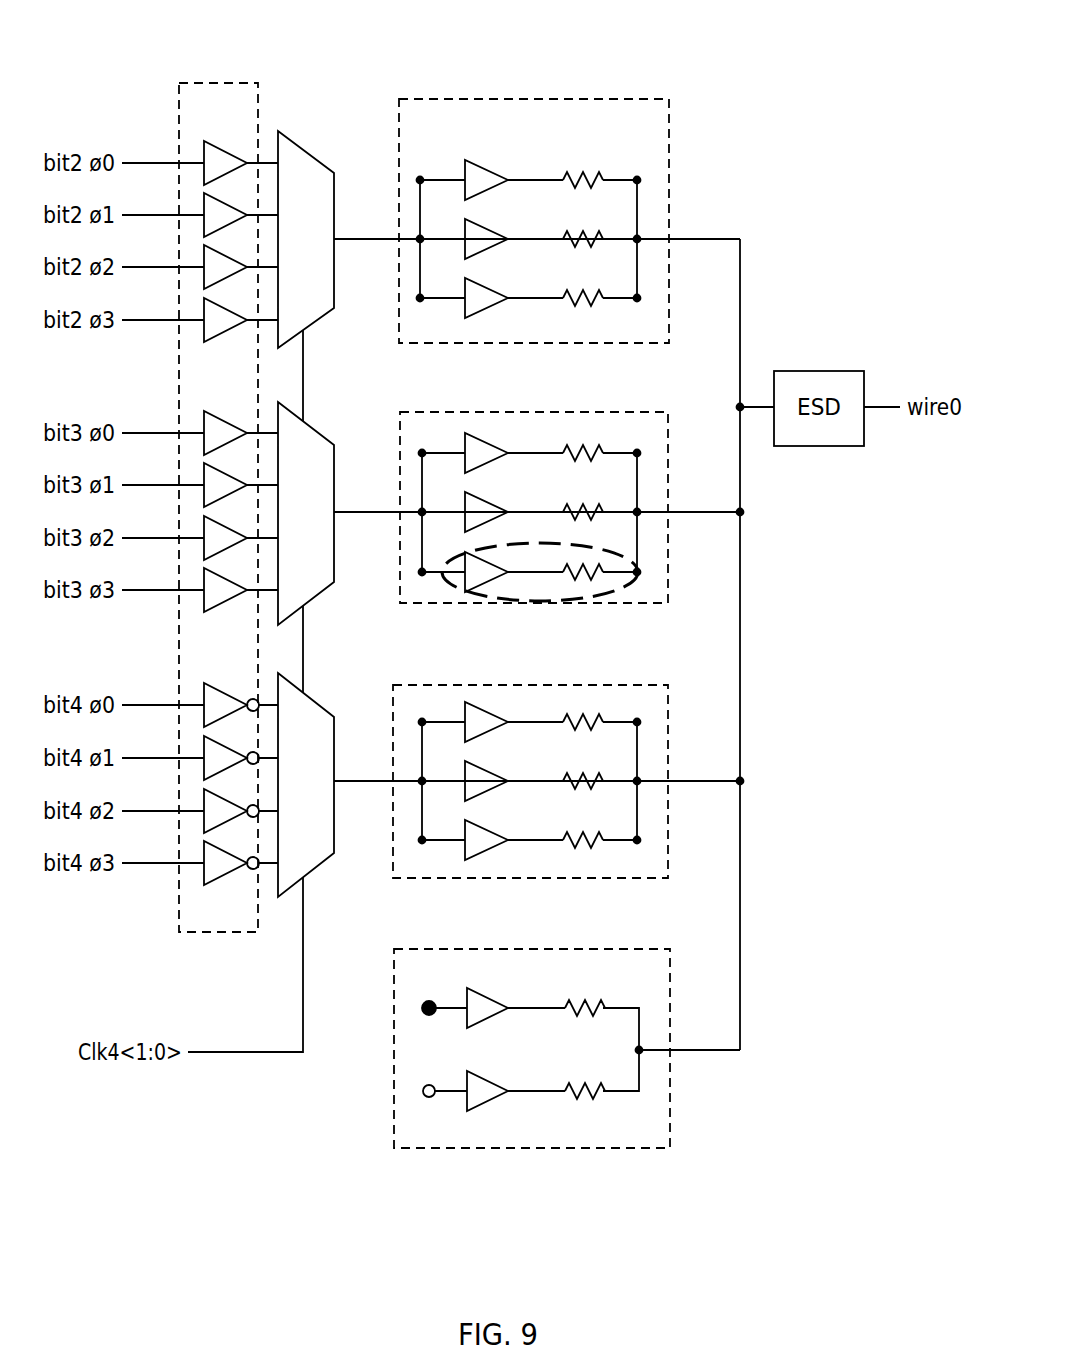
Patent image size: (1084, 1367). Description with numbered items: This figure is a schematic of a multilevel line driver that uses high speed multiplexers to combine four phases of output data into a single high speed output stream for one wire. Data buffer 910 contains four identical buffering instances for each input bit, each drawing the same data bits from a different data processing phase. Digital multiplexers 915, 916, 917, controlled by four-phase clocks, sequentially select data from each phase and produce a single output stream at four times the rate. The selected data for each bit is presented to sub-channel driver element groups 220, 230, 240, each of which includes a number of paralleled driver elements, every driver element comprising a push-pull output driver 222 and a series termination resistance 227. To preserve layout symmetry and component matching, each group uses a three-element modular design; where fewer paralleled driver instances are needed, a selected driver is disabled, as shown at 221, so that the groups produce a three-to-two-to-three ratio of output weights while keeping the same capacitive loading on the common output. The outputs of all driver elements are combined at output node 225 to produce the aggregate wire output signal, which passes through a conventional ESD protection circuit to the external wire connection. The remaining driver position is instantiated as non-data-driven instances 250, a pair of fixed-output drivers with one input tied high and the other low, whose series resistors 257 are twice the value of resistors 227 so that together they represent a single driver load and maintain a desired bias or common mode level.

The data buffer 910 is at (215, 83).
The digital multiplexer 915 is at (326, 168).
The digital multiplexer 916 is at (326, 433).
The digital multiplexer 917 is at (326, 705).
The sub-channel driver element group 220 is at (567, 203).
The push-pull output driver 222 is at (466, 160).
The series termination resistance 227 is at (565, 177).
The output node 225 is at (740, 327).
The sub-channel driver element group 230 is at (569, 503).
The disabled driver element 221 is at (580, 597).
The sub-channel driver element group 240 is at (628, 685).
The non-data-driven driver instances 250 is at (567, 1024).
The series resistors 257 is at (585, 1002).